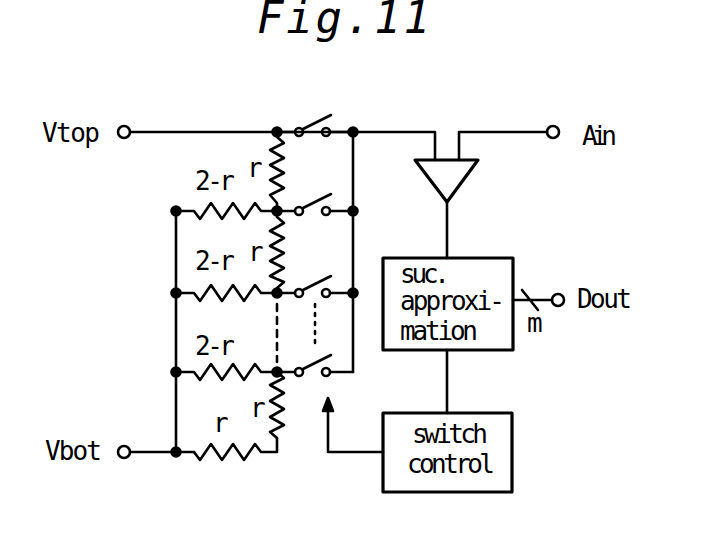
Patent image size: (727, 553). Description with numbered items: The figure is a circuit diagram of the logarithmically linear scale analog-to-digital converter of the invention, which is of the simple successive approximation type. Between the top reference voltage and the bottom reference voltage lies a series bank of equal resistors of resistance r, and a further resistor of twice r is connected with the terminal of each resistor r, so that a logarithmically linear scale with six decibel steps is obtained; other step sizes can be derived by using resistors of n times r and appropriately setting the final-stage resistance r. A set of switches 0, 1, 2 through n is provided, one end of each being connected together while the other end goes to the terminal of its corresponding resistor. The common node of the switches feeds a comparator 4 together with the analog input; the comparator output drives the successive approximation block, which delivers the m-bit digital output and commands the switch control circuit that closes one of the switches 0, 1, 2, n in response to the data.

The comparator 4 is at (446, 181).
The switch 0 is at (315, 109).
The switch 1 is at (315, 188).
The switch 2 is at (315, 270).
The switch n is at (315, 379).